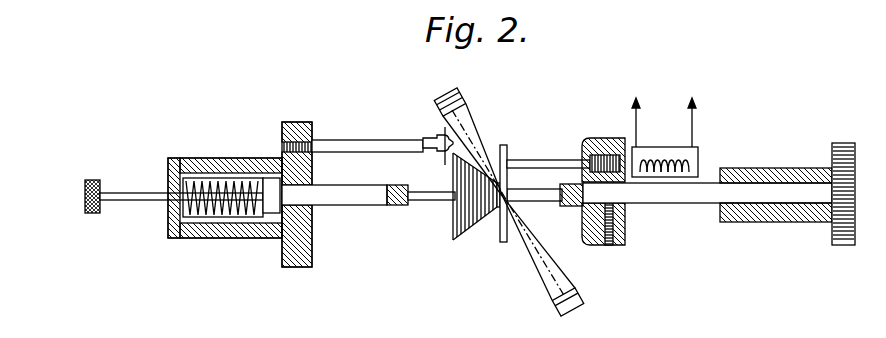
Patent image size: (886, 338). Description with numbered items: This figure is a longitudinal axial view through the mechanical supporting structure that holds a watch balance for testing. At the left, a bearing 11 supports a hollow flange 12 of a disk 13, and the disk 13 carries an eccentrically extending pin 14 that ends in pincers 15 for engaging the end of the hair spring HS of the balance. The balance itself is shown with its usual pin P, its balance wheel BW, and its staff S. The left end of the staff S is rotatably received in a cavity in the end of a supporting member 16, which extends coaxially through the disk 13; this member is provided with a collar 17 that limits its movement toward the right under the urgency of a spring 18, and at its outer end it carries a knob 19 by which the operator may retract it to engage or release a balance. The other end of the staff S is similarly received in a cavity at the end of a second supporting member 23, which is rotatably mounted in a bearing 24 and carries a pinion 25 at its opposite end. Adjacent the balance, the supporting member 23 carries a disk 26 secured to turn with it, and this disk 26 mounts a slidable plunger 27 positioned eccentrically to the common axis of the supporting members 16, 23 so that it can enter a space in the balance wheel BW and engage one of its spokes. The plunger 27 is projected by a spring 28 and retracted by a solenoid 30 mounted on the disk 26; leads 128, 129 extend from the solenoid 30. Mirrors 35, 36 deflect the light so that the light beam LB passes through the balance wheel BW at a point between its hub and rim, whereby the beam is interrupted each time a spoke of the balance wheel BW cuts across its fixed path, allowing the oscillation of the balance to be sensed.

The bearing 11 is at (202, 158).
The hollow flange 12 is at (227, 167).
The disk 13 is at (297, 122).
The eccentrically extending pin 14 is at (350, 135).
The pincers 15 is at (425, 140).
The supporting member 16 is at (348, 197).
The collar 17 is at (273, 200).
The spring 18 is at (193, 230).
The knob 19 is at (100, 210).
The supporting member 23 is at (673, 195).
The bearing 24 is at (772, 220).
The pinion 25 is at (835, 243).
The disk 26 is at (613, 245).
The slidable plunger 27 is at (527, 152).
The spring 28 is at (597, 150).
The solenoid 30 is at (698, 150).
The mirror 35 is at (466, 95).
The mirror 36 is at (576, 306).
The lead wire 128 is at (660, 84).
The lead wire 129 is at (695, 109).
The light beam LB is at (475, 130).
The hair spring HS is at (465, 215).
The staff S is at (422, 199).
The pin P is at (497, 205).
The balance wheel BW is at (503, 242).